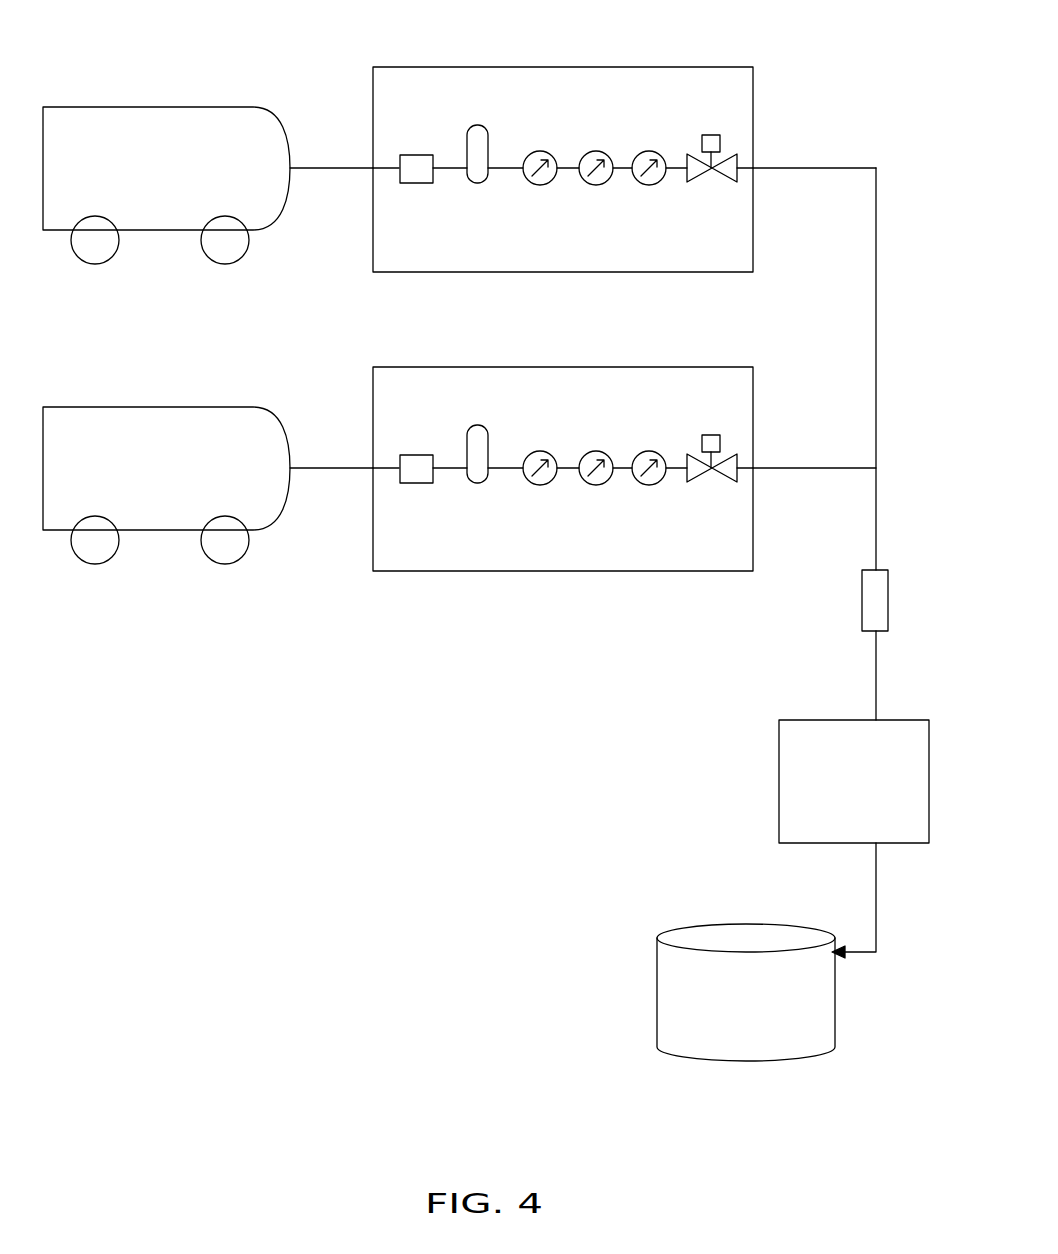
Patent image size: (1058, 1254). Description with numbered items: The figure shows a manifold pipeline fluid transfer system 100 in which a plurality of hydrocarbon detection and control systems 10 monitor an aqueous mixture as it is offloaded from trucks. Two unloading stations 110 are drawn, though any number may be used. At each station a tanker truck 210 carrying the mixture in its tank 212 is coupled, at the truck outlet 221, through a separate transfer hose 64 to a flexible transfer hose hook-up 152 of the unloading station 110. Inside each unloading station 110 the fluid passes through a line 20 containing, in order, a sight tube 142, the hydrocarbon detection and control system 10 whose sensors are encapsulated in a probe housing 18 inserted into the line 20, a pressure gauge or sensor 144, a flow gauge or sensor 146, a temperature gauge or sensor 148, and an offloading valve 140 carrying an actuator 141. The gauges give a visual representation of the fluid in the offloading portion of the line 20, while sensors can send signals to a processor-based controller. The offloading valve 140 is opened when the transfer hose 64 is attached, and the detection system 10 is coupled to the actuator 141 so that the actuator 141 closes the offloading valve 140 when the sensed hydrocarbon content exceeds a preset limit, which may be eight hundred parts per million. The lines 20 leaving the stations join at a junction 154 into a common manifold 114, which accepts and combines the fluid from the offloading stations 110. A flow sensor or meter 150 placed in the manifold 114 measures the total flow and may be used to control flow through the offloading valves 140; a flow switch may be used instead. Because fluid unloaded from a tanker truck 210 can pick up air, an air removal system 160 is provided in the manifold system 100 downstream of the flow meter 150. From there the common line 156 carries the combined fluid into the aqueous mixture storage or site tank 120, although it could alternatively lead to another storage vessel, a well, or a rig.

The hydrocarbon detection and control system 10 is at (477, 148).
The probe housing 18 is at (484, 184).
The line 20 is at (810, 165).
The transfer hose 64 is at (337, 165).
The manifold pipeline fluid transfer system 100 is at (893, 104).
The unloading station 110 is at (641, 274).
The manifold 114 is at (876, 510).
The site tank 120 is at (746, 992).
The offloading valve 140 is at (706, 184).
The actuator 141 is at (712, 135).
The sight tube 142 is at (423, 184).
The pressure gauge or sensor 144 is at (540, 150).
The flow gauge or sensor 146 is at (596, 186).
The temperature gauge or sensor 148 is at (650, 150).
The flow sensor or meter 150 is at (888, 603).
The flexible transfer hose hook-up 152 is at (364, 173).
The junction 154 is at (876, 468).
The common line 156 is at (876, 925).
The air removal system 160 is at (779, 779).
The tanker truck 210 is at (146, 232).
The tank 212 is at (130, 118).
The outlet 221 is at (291, 165).